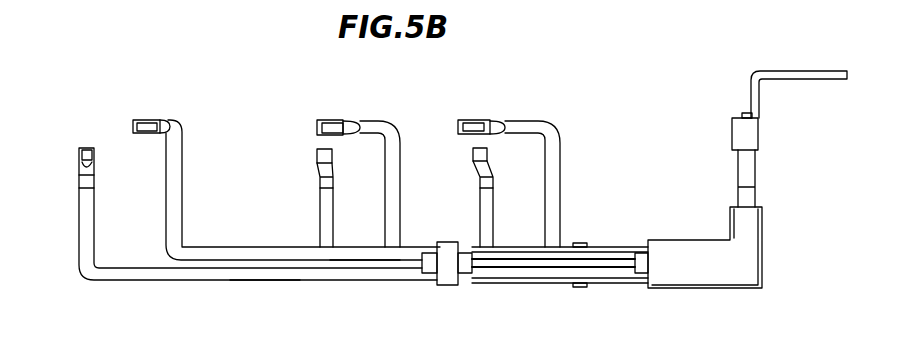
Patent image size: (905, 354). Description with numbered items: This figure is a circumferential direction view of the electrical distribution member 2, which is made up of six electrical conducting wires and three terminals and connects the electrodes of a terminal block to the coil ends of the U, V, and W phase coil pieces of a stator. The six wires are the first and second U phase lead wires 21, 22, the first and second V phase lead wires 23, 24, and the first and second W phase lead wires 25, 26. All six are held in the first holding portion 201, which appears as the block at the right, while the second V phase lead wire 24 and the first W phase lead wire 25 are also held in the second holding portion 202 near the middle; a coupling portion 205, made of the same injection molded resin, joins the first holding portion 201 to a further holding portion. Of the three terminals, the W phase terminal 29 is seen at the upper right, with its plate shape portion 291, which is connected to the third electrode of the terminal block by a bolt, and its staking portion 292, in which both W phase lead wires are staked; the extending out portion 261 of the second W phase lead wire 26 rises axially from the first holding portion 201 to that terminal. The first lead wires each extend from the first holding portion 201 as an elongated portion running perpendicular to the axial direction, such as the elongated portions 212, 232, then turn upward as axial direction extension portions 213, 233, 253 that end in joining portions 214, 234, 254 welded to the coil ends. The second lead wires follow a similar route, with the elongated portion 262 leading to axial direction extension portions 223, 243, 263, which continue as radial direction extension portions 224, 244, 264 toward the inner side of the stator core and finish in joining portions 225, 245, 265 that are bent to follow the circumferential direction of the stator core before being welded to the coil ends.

The electrical distribution member 2 is at (790, 291).
The first U phase lead wire 21 is at (311, 131).
The second U phase lead wire 22 is at (568, 101).
The first V phase lead wire 23 is at (82, 127).
The second V phase lead wire 24 is at (314, 95).
The first W phase lead wire 25 is at (459, 150).
The second W phase lead wire 26 is at (157, 99).
The W phase terminal 29 is at (856, 57).
The first holding portion 201 is at (672, 283).
The second holding portion 202 is at (443, 277).
The coupling portion 205 is at (506, 262).
The elongated portion 212 is at (598, 257).
The axial direction extension portion 213 is at (327, 210).
The joining portion 214 is at (317, 152).
The axial direction extension portion 223 is at (549, 202).
The radial direction extension portion 224 is at (510, 126).
The joining portion 225 is at (470, 126).
The elongated portion 232 is at (282, 278).
The axial direction extension portion 233 is at (88, 215).
The joining portion 234 is at (88, 155).
The axial direction extension portion 243 is at (388, 194).
The radial direction extension portion 244 is at (355, 127).
The joining portion 245 is at (333, 120).
The axial direction extension portion 253 is at (487, 204).
The joining portion 254 is at (487, 156).
The extending out portion 261 is at (748, 175).
The elongated portion 262 is at (360, 252).
The axial direction extension portion 263 is at (173, 200).
The radial direction extension portion 264 is at (167, 122).
The joining portion 265 is at (141, 126).
The plate shape portion 291 is at (830, 80).
The staking portion 292 is at (750, 138).